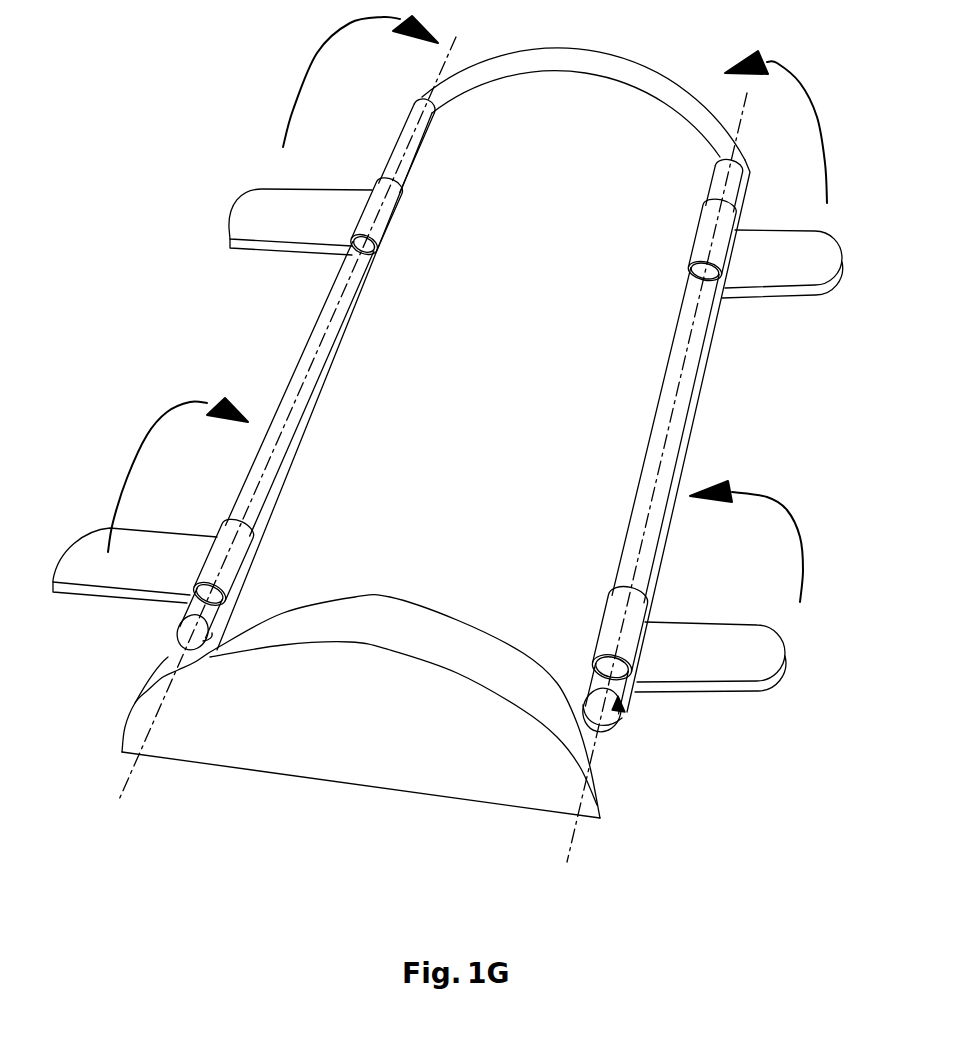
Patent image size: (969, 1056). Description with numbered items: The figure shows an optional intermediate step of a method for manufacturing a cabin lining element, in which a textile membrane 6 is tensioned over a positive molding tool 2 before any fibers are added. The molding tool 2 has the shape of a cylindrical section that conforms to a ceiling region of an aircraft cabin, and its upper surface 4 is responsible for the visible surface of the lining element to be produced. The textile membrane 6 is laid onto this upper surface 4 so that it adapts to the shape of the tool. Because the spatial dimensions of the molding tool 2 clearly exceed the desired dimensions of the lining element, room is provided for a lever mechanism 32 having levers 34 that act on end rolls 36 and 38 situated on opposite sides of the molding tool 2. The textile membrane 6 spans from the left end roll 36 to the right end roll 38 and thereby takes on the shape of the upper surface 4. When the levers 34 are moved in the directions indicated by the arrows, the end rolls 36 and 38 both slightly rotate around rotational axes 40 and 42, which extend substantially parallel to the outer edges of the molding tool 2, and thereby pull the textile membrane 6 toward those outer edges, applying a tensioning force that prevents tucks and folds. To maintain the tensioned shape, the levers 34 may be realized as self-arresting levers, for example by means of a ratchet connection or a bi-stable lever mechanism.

The positive molding tool 2 is at (594, 760).
The upper surface 4 is at (375, 631).
The textile membrane 6 is at (633, 380).
The lever mechanism 32 is at (770, 320).
The levers 34 is at (258, 222).
The left end roll 36 is at (165, 615).
The right end roll 38 is at (617, 722).
The rotational axis 40 is at (120, 788).
The rotational axis 42 is at (570, 850).